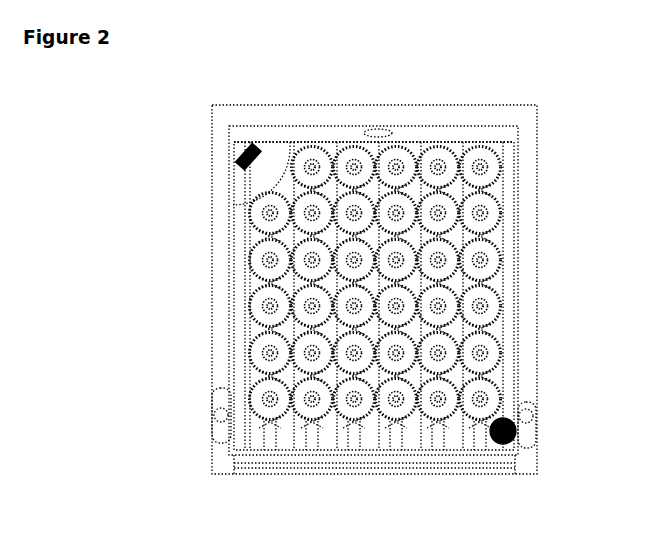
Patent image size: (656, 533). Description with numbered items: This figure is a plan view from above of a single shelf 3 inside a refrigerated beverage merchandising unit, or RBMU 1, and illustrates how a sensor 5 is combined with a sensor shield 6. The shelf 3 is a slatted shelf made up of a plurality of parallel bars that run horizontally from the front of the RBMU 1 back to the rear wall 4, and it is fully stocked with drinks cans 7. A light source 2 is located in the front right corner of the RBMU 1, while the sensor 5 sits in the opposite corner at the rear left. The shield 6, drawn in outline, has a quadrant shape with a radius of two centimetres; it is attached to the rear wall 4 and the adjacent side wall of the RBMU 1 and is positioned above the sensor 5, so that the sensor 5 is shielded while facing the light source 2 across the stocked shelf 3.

The RBMU 1 is at (200, 188).
The light source 2 is at (503, 418).
The shelf 3 is at (447, 433).
The rear wall 4 is at (503, 147).
The sensor 5 is at (250, 160).
The shield 6 is at (283, 167).
The drinks cans 7 is at (268, 357).